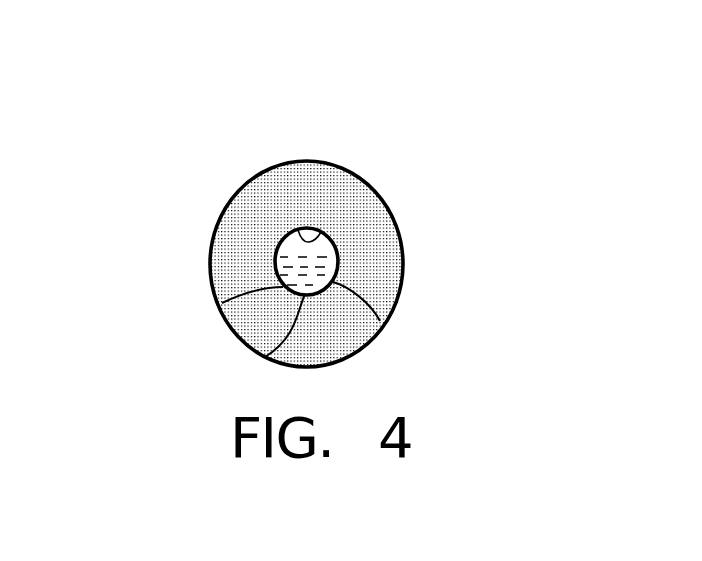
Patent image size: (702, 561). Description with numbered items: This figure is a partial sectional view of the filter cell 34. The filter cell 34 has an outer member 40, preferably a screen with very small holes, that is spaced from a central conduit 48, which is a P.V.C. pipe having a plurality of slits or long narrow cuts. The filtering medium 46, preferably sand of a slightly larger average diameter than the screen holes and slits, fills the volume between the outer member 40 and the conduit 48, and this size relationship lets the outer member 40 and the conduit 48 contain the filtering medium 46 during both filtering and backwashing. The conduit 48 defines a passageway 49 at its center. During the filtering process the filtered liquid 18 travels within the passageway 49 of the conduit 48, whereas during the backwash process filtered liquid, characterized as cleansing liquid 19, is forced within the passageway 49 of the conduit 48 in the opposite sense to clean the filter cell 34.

The filter cell 34 is at (289, 246).
The outer member 40 is at (403, 267).
The filtering medium 46 is at (360, 228).
The passageway 49 is at (322, 232).
The cleansing liquid 19 is at (220, 303).
The filtered liquid 18 is at (263, 356).
The conduit 48 is at (380, 321).